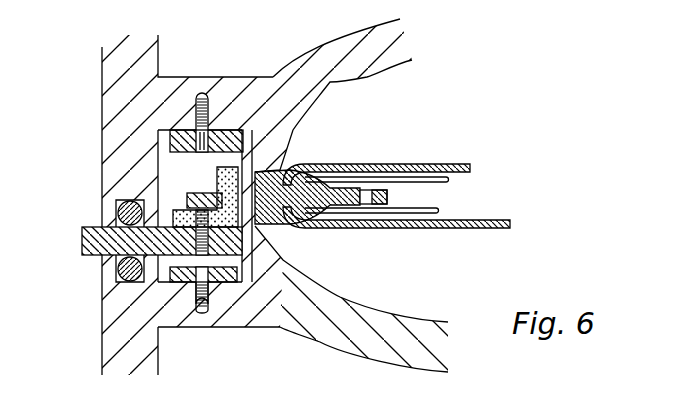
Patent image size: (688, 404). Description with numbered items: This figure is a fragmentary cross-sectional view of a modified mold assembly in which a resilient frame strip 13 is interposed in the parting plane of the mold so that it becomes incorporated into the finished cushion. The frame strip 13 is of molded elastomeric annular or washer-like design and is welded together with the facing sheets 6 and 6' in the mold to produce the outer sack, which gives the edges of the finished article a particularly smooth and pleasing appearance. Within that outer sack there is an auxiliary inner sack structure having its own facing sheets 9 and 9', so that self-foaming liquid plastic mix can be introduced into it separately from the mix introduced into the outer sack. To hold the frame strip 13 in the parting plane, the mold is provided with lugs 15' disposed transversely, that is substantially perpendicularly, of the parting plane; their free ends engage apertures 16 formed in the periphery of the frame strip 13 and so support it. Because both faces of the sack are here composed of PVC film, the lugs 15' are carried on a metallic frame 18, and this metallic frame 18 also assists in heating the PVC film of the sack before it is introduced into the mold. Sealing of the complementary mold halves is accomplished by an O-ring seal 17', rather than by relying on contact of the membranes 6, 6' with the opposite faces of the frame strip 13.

The facing sheet 6 is at (403, 231).
The facing sheet 6' is at (376, 151).
The facing sheet 9 is at (400, 201).
The facing sheet 9' is at (388, 186).
The frame strip 13 is at (308, 168).
The lugs 15' is at (205, 193).
The apertures 16 is at (268, 228).
The O-ring seal 17' is at (99, 233).
The metallic frame 18 is at (118, 241).